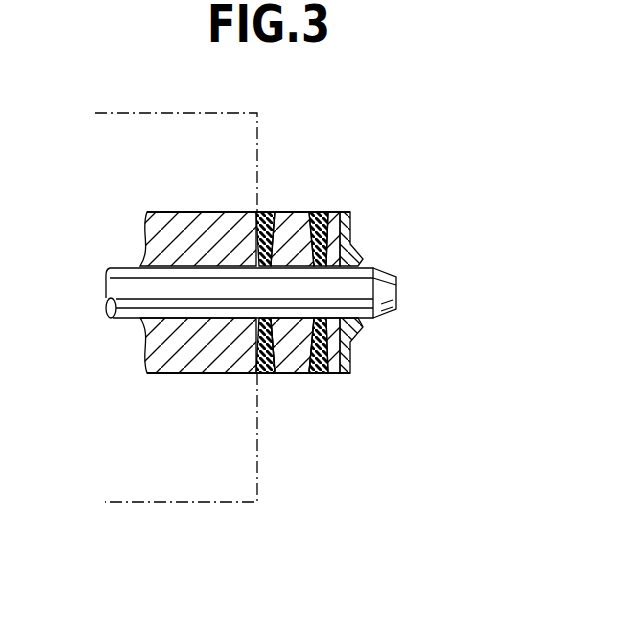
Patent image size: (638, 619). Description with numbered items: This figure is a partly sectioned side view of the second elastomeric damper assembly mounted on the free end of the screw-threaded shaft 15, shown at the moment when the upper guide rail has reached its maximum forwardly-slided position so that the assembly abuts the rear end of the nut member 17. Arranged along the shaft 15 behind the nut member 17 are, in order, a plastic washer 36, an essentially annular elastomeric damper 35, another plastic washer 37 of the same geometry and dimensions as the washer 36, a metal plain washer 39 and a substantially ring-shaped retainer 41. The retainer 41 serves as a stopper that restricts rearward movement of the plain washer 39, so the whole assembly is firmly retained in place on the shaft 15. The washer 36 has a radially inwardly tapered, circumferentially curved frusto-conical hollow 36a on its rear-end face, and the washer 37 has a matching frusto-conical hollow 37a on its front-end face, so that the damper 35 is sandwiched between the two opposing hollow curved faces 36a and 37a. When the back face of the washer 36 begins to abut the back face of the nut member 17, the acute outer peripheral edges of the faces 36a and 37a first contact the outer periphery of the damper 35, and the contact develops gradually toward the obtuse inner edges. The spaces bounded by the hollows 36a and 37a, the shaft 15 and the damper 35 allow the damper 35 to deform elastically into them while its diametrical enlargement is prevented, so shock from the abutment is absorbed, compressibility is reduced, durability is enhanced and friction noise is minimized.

The screw-threaded shaft 15 is at (392, 269).
The nut member 17 is at (148, 482).
The elastomeric damper 35 is at (297, 212).
The plastic washer 36 is at (265, 212).
The frusto-conical hollow 36a is at (276, 345).
The plastic washer 37 is at (320, 212).
The frusto-conical hollow 37a is at (290, 345).
The metal plain washer 39 is at (340, 212).
The retainer 41 is at (353, 350).